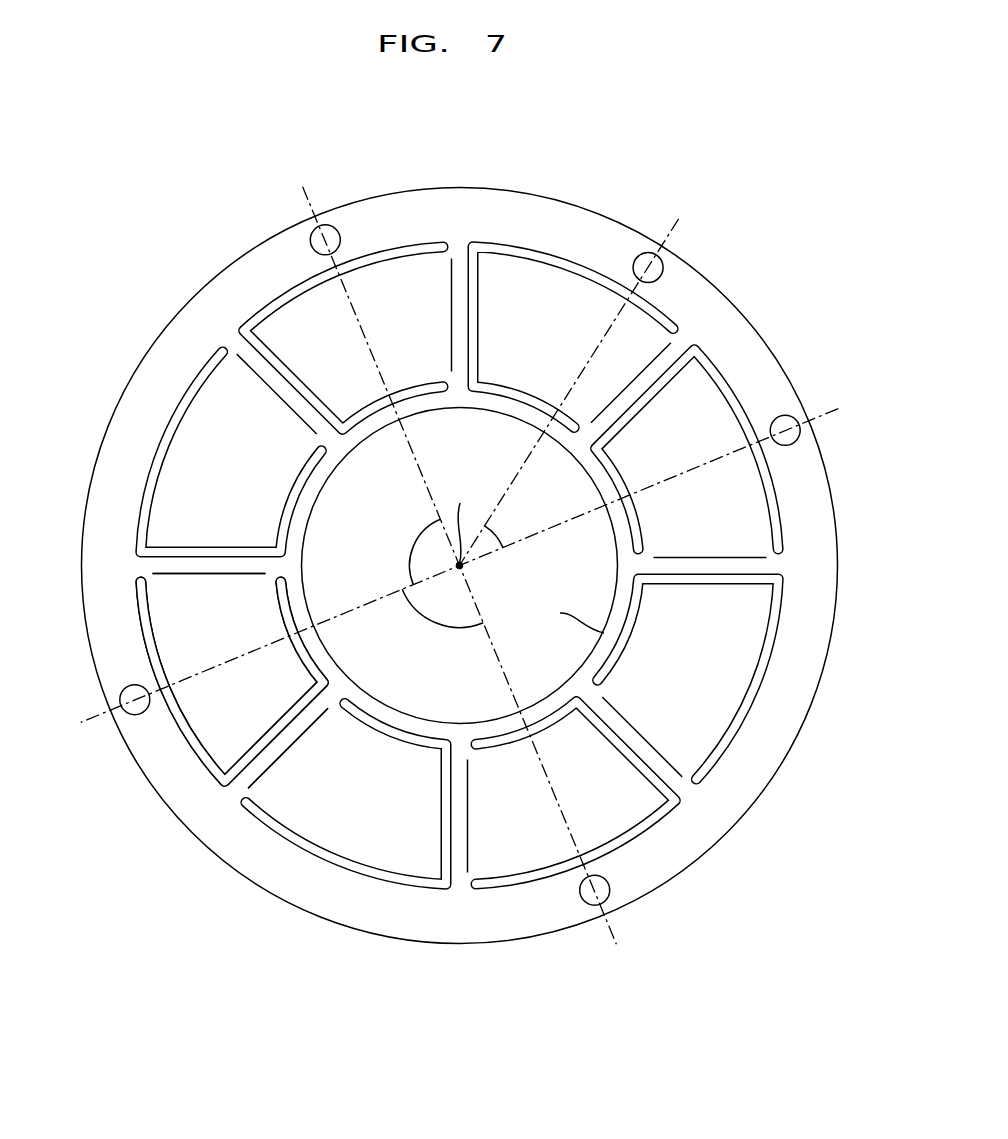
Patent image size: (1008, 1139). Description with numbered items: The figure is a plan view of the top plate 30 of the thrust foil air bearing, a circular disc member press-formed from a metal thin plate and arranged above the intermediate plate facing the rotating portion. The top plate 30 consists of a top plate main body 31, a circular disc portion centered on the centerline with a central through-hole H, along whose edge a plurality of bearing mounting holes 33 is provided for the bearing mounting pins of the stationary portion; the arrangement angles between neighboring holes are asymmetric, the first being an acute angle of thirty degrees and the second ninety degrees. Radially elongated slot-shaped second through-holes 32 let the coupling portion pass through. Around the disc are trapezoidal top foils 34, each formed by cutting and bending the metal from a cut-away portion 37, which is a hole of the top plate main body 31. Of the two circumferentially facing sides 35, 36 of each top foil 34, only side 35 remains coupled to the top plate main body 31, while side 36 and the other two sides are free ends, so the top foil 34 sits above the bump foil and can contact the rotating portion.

The top plate 30 is at (736, 221).
The top plate main body 31 is at (818, 517).
The second through-hole 32 is at (275, 740).
The bearing mounting hole 33 is at (799, 440).
The top foil 34 is at (170, 625).
The one side 35 is at (165, 573).
The other side 36 is at (238, 787).
The cut-away portion 37 is at (148, 655).